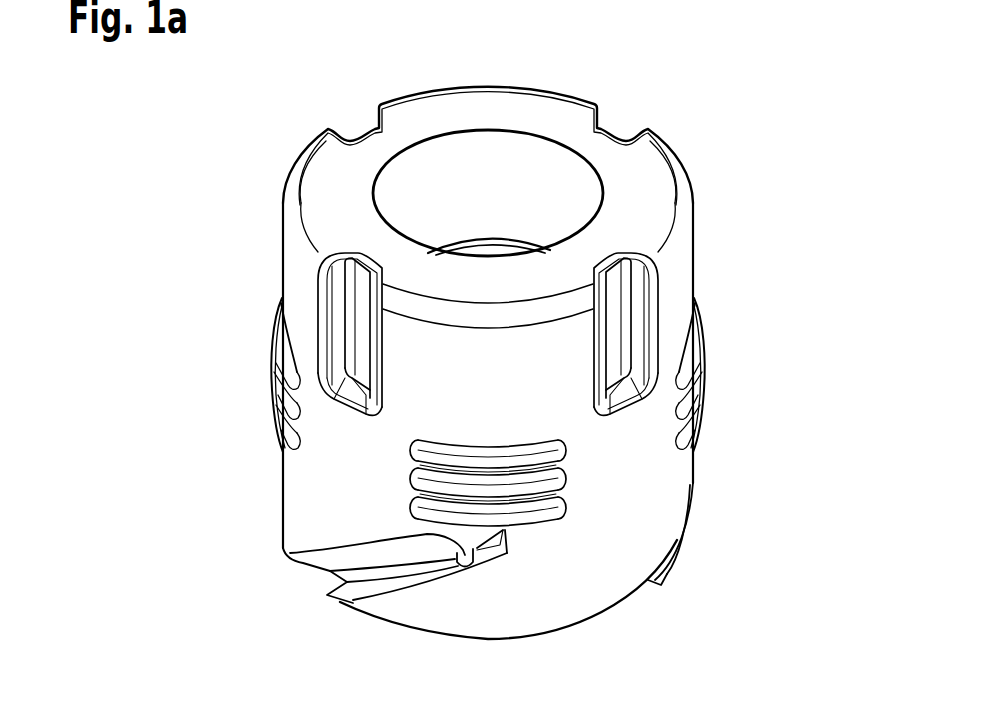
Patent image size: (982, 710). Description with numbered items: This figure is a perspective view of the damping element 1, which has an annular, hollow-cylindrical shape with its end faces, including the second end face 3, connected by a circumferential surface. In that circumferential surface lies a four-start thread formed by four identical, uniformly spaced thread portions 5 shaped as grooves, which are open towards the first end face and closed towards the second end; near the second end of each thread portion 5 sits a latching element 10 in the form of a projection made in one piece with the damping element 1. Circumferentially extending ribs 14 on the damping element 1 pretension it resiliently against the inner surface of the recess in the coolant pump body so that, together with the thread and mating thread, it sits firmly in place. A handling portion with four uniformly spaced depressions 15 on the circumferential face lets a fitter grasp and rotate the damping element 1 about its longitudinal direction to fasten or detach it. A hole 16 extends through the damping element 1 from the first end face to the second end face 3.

The damping element 1 is at (795, 128).
The second end face 3 is at (632, 188).
The thread portions 5 is at (672, 555).
The latching element 10 is at (292, 554).
The ribs 14 is at (548, 482).
The depressions 15 is at (372, 272).
The hole 16 is at (516, 156).